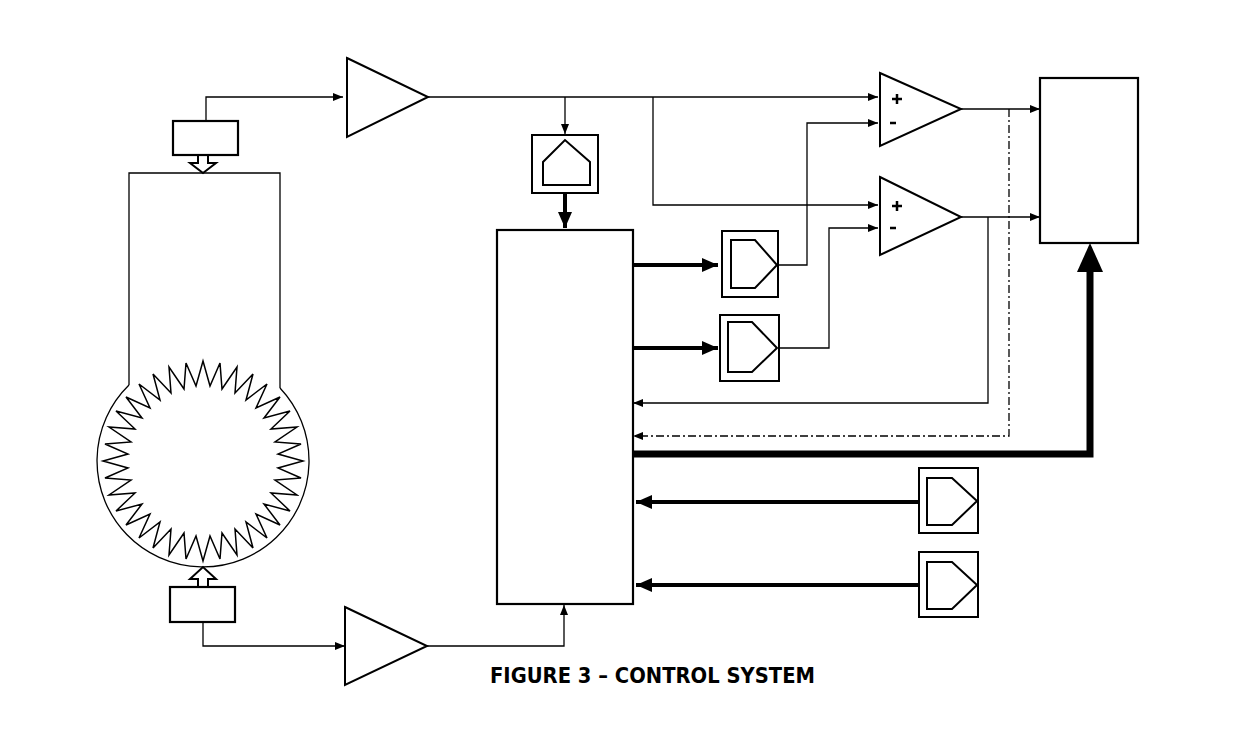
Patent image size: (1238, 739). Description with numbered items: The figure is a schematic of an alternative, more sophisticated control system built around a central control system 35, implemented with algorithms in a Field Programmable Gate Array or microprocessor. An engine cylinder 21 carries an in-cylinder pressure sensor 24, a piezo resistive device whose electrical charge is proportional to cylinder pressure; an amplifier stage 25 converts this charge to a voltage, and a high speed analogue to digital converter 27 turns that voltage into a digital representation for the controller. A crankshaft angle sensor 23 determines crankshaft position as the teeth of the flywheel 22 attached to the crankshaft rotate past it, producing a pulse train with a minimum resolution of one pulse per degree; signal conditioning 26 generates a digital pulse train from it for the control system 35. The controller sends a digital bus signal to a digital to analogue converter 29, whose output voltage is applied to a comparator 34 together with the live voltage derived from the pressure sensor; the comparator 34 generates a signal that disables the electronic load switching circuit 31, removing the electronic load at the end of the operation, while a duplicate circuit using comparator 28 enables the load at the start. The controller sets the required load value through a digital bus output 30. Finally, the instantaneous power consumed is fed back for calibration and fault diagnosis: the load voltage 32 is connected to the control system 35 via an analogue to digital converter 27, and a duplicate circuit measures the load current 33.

The engine cylinder 21 is at (213, 285).
The flywheel 22 is at (304, 458).
The crankshaft angle sensor 23 is at (169, 605).
The in-cylinder pressure sensor 24 is at (172, 139).
The amplifier stage 25 is at (391, 122).
The signal conditioning 26 is at (389, 621).
The analogue to digital converter 27 is at (531, 165).
The comparator 28 is at (921, 134).
The digital to analogue converter 29 is at (745, 230).
The digital bus output 30 is at (1097, 350).
The electronic load switching circuit 31 is at (1140, 162).
The load voltage 32 is at (979, 502).
The load current 33 is at (979, 585).
The comparator 34 is at (921, 240).
The control system 35 is at (496, 418).